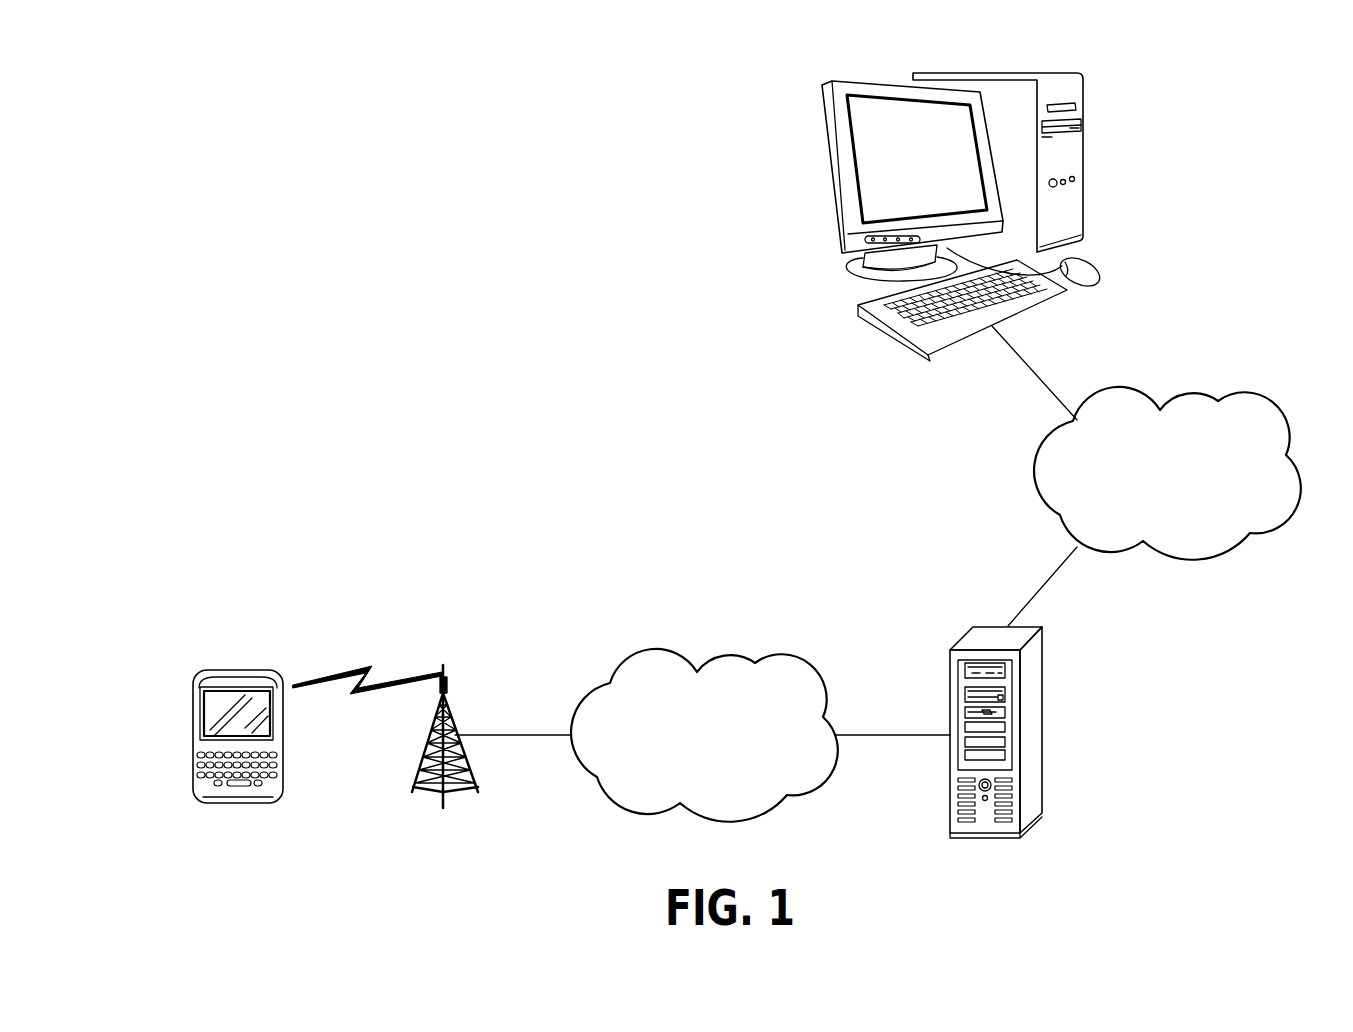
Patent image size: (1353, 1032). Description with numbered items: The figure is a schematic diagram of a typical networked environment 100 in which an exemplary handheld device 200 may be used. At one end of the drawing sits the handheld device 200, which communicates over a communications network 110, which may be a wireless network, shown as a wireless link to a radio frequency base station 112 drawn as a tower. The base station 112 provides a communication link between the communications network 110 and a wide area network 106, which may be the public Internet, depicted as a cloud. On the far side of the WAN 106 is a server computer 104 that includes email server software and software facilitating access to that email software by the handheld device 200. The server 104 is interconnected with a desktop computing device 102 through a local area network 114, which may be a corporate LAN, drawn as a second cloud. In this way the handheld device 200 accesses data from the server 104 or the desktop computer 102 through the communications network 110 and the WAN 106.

The networked environment 100 is at (446, 289).
The desktop computing device 102 is at (1075, 92).
The server computer 104 is at (1037, 670).
The wide area network (WAN) 106 is at (725, 762).
The communications network 110 is at (358, 644).
The radio frequency (RF) base station 112 is at (447, 672).
The local area network (LAN) 114 is at (1188, 500).
The handheld device 200 is at (241, 670).